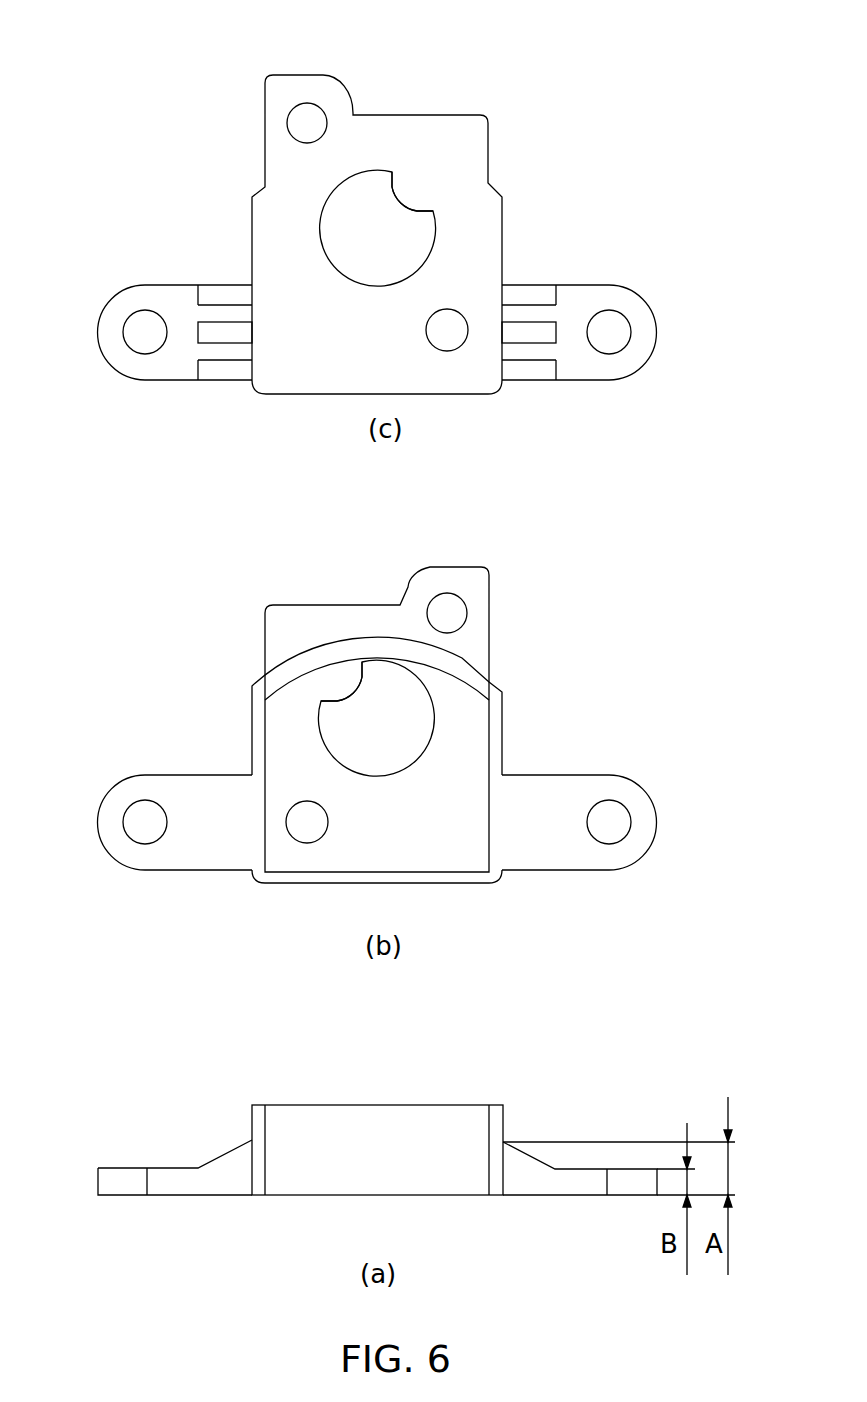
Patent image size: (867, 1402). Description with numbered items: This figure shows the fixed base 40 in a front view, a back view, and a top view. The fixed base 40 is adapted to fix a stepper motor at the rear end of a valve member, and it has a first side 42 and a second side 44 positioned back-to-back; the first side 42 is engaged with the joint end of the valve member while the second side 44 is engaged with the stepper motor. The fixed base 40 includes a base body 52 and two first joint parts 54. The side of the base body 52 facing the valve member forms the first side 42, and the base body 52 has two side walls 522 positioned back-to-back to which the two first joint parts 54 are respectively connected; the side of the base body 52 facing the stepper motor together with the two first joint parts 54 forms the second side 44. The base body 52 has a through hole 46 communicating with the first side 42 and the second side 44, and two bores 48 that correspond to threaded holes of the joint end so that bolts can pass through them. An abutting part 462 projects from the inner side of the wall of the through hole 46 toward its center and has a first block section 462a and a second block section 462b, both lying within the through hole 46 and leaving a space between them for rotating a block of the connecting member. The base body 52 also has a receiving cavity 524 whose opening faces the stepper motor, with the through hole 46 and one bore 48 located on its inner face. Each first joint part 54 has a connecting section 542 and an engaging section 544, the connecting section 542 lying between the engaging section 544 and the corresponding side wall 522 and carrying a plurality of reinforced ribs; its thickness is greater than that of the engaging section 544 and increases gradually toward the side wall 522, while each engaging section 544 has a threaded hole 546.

The fixed base 40 is at (584, 92).
The first side 42 is at (292, 88).
The second side 44 is at (197, 785).
The through hole 46 is at (345, 247).
The bore 48 is at (303, 124).
The base body 52 is at (390, 818).
The first joint part 54 is at (579, 738).
The abutting part 462 is at (384, 353).
The first block section 462a is at (423, 208).
The second block section 462b is at (394, 178).
The side wall 522 is at (250, 690).
The receiving cavity 524 is at (287, 740).
The connecting section 542 is at (535, 290).
The engaging section 544 is at (615, 290).
The threaded hole 546 is at (612, 338).